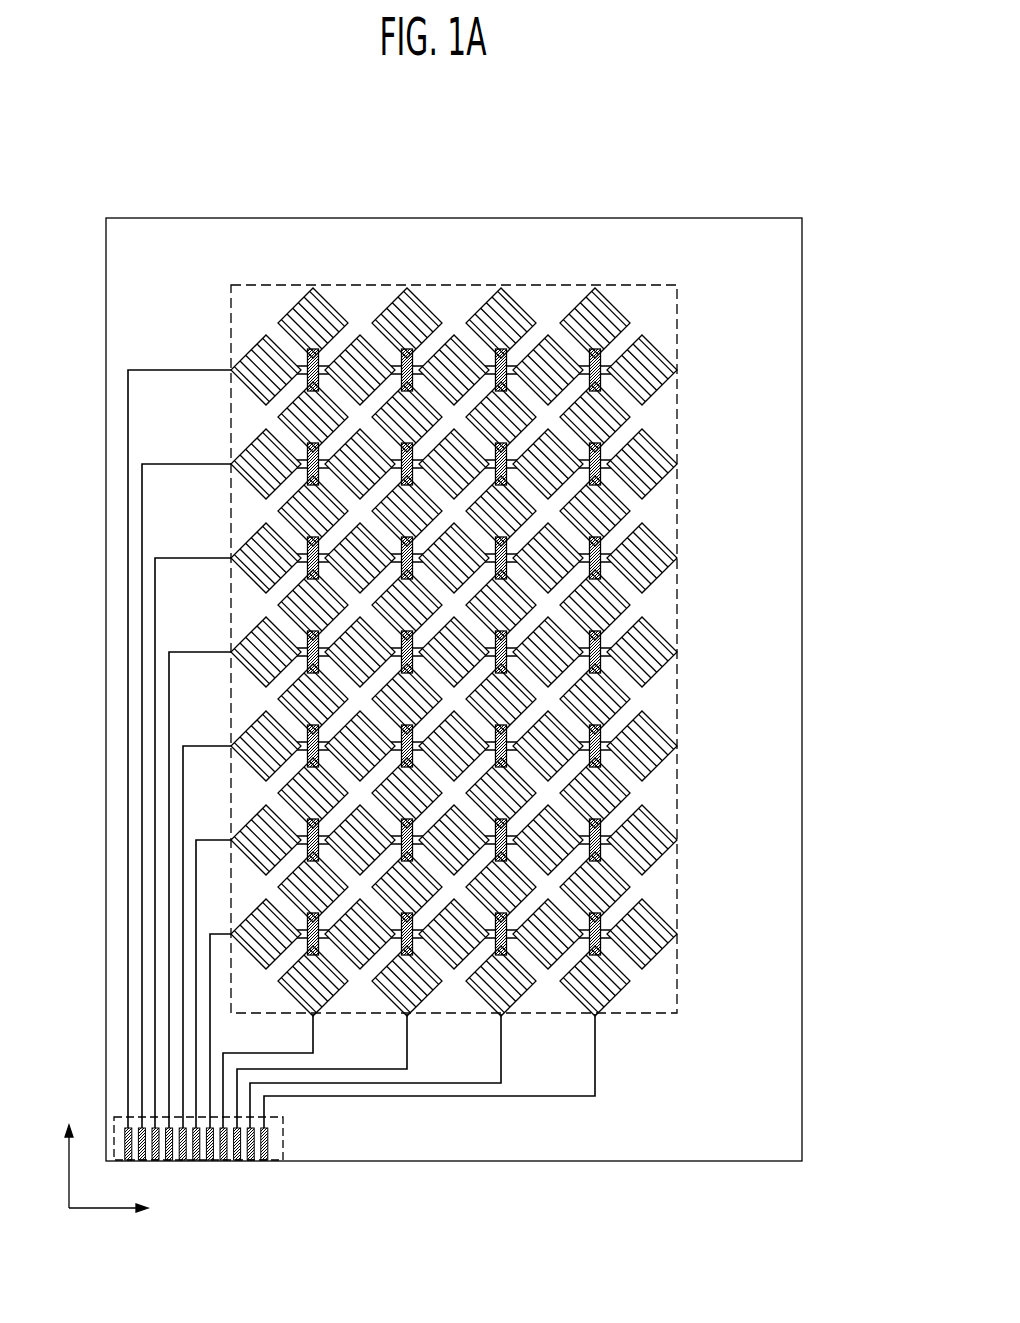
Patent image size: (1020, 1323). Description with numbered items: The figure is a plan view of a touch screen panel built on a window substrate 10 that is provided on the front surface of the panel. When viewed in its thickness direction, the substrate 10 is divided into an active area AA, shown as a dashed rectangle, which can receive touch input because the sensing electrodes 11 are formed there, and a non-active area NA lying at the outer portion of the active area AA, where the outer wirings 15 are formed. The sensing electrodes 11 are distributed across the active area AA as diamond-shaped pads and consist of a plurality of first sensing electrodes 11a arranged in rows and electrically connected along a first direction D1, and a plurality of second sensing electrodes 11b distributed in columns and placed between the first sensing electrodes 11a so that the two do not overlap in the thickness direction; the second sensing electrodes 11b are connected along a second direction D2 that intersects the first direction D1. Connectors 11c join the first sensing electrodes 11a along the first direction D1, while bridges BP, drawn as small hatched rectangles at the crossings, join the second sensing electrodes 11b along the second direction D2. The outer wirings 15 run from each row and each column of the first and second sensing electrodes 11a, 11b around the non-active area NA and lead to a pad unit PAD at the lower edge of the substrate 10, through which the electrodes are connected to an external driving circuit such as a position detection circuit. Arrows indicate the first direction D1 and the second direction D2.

The substrate 10 is at (747, 232).
The sensing electrodes 11 is at (454, 566).
The first sensing electrodes 11a is at (250, 348).
The second sensing electrodes 11b is at (308, 305).
The connectors 11c is at (378, 327).
The bridges BP is at (450, 345).
The active area AA is at (678, 407).
The non-active area NA is at (788, 527).
The outer wirings 15 is at (128, 542).
The pad unit PAD is at (283, 1143).
The first direction D1 is at (124, 1212).
The second direction D2 is at (70, 1149).